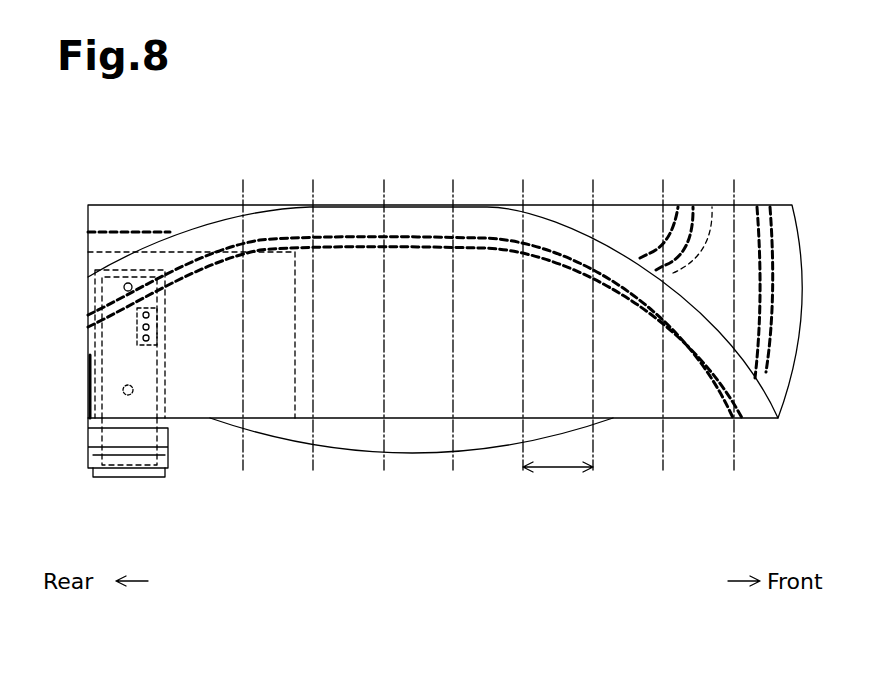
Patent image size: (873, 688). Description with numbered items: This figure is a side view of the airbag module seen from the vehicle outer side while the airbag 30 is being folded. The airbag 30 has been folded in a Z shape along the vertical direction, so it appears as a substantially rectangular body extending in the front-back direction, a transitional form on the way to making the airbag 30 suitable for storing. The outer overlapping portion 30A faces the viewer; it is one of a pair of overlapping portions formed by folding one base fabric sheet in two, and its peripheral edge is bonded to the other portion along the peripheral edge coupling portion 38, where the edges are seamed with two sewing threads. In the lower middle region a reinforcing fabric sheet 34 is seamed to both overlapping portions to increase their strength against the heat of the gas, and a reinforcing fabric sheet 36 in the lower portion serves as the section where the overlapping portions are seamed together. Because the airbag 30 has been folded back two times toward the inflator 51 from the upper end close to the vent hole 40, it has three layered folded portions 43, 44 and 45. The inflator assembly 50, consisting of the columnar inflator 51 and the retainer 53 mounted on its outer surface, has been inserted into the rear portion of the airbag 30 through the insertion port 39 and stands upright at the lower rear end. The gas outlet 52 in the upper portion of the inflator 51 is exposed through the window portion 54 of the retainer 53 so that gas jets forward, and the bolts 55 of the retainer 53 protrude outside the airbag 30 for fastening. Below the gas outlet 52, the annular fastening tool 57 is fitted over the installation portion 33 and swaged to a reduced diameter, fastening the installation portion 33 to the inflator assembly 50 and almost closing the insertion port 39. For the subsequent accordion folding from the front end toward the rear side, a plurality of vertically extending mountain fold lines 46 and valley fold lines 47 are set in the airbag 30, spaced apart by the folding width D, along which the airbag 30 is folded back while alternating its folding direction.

The airbag 30 is at (430, 140).
The overlapping portion 30A is at (472, 215).
The installation portion 33 is at (168, 455).
The reinforcing fabric sheet 34 is at (296, 320).
The reinforcing fabric sheet 36 is at (712, 207).
The peripheral edge coupling portion 38 is at (413, 237).
The insertion port 39 is at (157, 470).
The vent hole 40 is at (88, 397).
The folded portion 43 is at (487, 455).
The folded portion 44 is at (773, 210).
The folded portion 45 is at (603, 243).
The mountain fold line 46 is at (313, 465).
The valley fold line 47 is at (243, 185).
The inflator assembly 50 is at (152, 505).
The inflator 51 is at (157, 341).
The gas outlet 52 is at (137, 338).
The retainer 53 is at (157, 277).
The window portion 54 is at (155, 312).
The bolt 55 is at (128, 283).
The fastening tool 57 is at (170, 435).
The folding width D is at (553, 467).